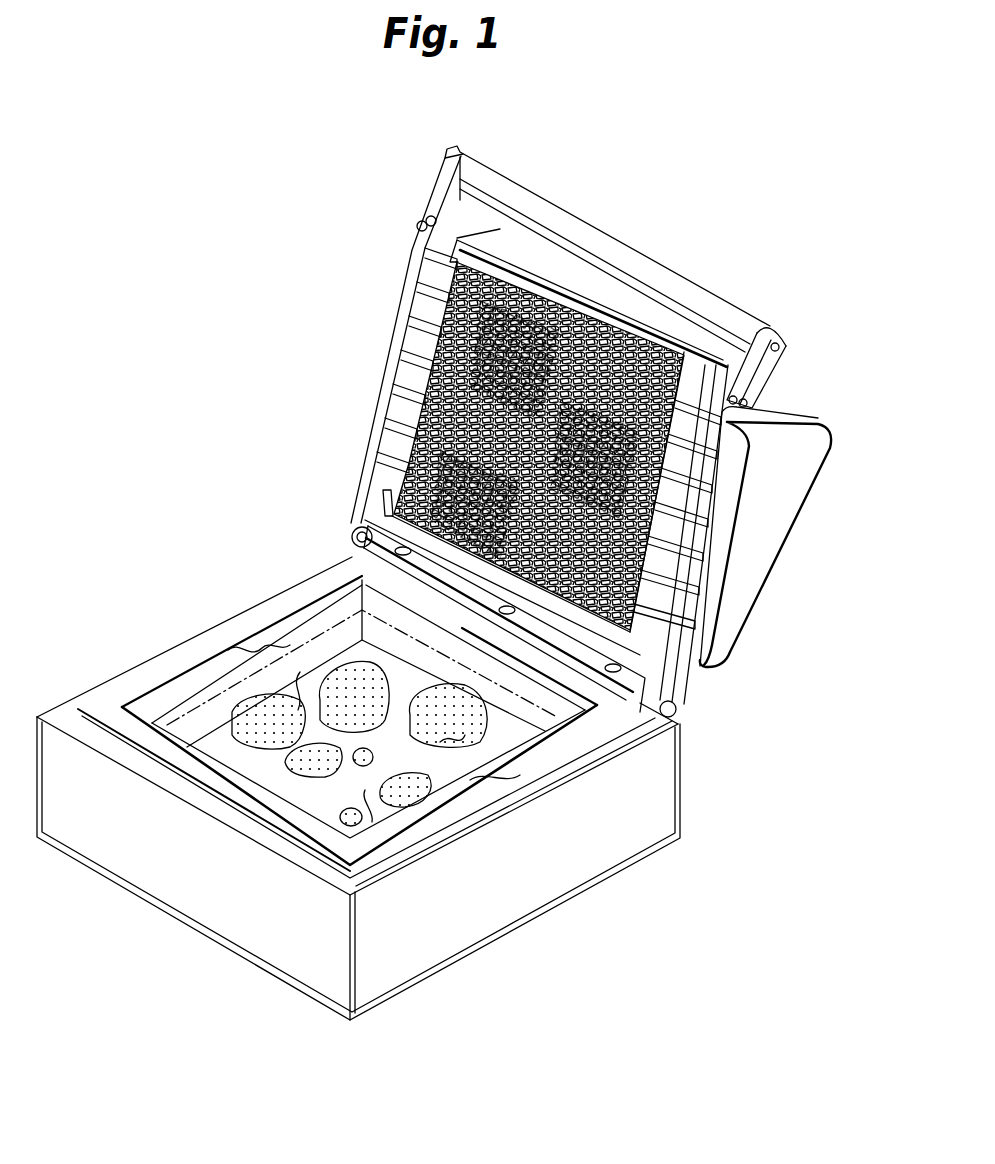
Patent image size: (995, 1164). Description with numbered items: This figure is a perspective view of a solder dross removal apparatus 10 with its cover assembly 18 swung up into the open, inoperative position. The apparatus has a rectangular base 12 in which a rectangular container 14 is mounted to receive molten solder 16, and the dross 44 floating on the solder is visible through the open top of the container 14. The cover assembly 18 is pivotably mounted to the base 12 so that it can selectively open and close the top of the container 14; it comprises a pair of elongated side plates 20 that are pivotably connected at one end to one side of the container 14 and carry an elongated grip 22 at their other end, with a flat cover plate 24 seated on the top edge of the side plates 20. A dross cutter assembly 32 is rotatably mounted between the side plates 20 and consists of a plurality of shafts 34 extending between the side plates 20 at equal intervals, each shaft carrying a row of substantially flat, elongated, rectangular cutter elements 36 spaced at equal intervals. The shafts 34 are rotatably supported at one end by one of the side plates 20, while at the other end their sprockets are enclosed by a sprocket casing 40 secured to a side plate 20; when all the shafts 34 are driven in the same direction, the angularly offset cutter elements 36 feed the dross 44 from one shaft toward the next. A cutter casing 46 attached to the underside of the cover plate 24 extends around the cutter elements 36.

The solder dross removal apparatus 10 is at (213, 368).
The rectangular base 12 is at (663, 793).
The rectangular container 14 is at (447, 797).
The molten solder 16 is at (313, 650).
The cover assembly 18 is at (473, 227).
The side plates 20 is at (412, 252).
The grip 22 is at (461, 184).
The cover plate 24 is at (732, 373).
The dross cutter assembly 32 is at (700, 355).
The shafts 34 is at (403, 355).
The cutter elements 36 is at (384, 390).
The sprocket casing 40 is at (757, 543).
The dross 44 is at (252, 698).
The cutter casing 46 is at (582, 294).